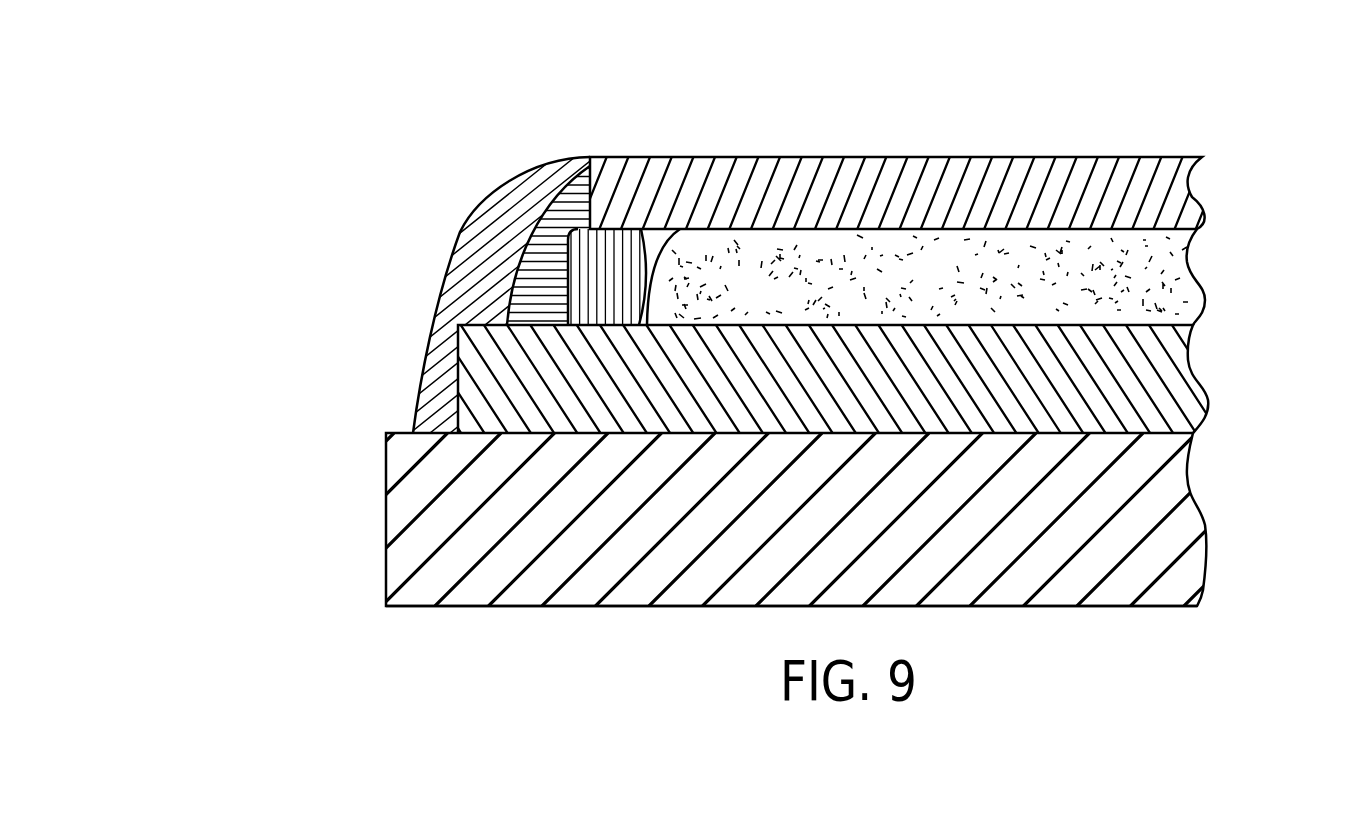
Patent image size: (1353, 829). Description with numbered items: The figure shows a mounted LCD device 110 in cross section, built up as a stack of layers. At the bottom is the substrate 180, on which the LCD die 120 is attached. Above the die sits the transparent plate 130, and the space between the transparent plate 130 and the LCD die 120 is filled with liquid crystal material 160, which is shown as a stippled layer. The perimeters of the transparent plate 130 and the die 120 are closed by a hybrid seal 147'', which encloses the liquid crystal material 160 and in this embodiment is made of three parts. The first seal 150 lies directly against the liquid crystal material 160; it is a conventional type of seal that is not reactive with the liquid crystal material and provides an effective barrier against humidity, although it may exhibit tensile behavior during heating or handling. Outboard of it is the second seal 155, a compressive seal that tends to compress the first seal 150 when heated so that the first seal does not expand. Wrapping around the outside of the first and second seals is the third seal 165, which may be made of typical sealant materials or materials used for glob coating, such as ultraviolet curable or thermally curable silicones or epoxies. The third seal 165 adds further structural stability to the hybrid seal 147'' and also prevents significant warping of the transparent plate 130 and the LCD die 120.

The mounted LCD device 110 is at (228, 173).
The LCD die 120 is at (1203, 383).
The transparent plate 130 is at (1200, 202).
The hybrid seal 147'' is at (463, 295).
The first seal 150 is at (588, 231).
The second seal 155 is at (522, 262).
The liquid crystal material 160 is at (1195, 283).
The third seal 165 is at (416, 372).
The substrate 180 is at (1205, 533).